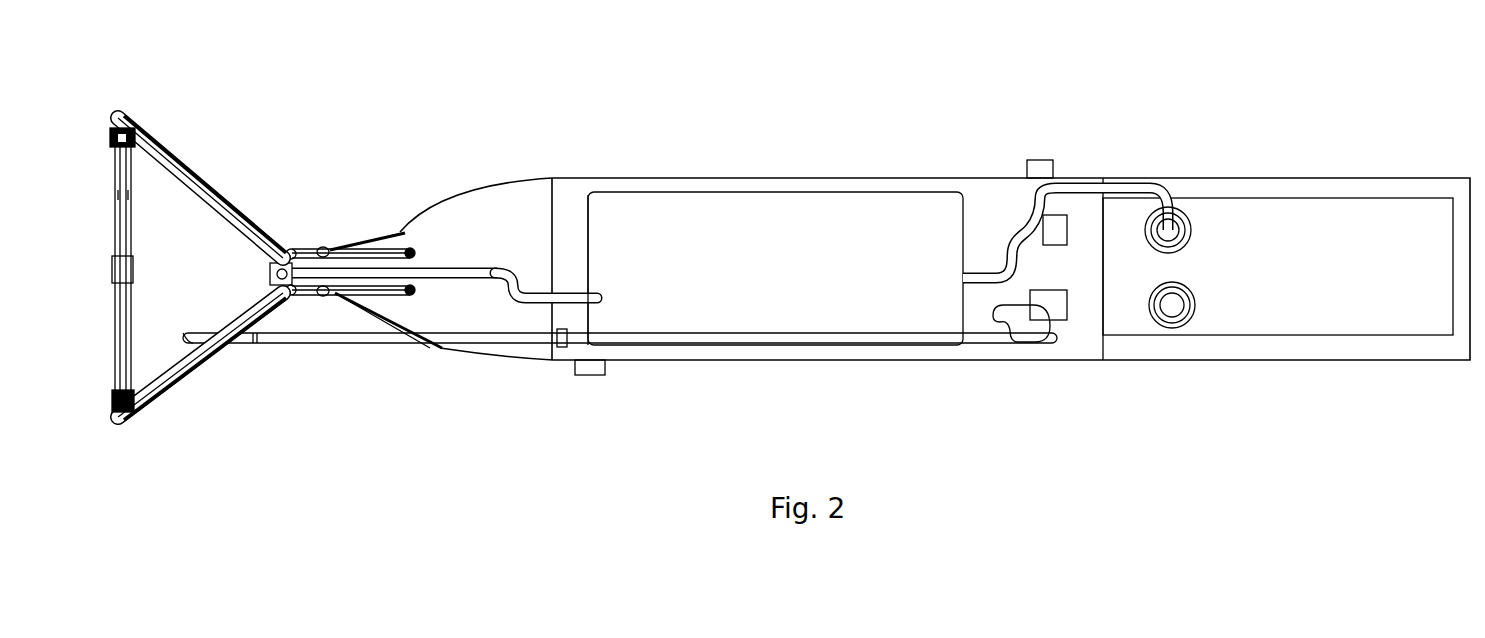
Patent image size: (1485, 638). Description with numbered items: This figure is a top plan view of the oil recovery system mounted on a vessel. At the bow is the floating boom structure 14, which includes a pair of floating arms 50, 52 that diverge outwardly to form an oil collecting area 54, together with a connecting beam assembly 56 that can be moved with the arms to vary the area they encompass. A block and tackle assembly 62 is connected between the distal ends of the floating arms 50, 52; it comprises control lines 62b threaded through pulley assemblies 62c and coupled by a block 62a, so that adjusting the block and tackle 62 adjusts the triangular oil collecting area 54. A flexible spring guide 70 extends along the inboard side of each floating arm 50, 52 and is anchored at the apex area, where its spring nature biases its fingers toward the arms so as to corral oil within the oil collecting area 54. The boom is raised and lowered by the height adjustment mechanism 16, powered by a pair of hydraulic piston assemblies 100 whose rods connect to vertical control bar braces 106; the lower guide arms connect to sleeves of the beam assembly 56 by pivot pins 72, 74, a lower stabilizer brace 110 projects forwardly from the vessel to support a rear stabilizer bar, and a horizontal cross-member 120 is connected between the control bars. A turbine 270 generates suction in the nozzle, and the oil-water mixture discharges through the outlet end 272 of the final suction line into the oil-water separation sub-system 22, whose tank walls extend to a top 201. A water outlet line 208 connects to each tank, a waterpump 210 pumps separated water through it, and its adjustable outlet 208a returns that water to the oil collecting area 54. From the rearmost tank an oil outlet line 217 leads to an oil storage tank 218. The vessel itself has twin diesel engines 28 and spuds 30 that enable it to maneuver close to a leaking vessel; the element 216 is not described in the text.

The floating boom structure 14 is at (211, 115).
The height adjustment mechanism 16 is at (383, 165).
The oil-water separation sub-system 22 is at (810, 150).
The twin diesel engines 28 is at (1058, 227).
The spuds 30 is at (1042, 170).
The floating arm 50 is at (218, 183).
The floating arm 52 is at (168, 392).
The oil collecting area 54 is at (157, 312).
The connecting beam assembly 56 is at (187, 170).
The block and tackle assembly 62 is at (113, 353).
The block 62a is at (128, 257).
The control lines 62b is at (130, 195).
The pulley assemblies 62c is at (114, 128).
The flexible spring guide 70 is at (262, 252).
The pivot pin 72 is at (281, 255).
The pivot pin 74 is at (283, 290).
The hydraulic piston assembly 100 is at (408, 250).
The vertical control bar brace 106 is at (330, 248).
The lower stabilizer brace 110 is at (356, 245).
The horizontal cross-member 120 is at (302, 265).
The top 201 is at (740, 222).
The water outlet line 208 is at (740, 340).
The adjustable outlet 208a is at (180, 332).
The waterpump 210 is at (1028, 332).
The conduit 216 is at (1017, 230).
The oil outlet line 217 is at (1133, 181).
The oil storage tank 218 is at (1292, 240).
The turbine 270 is at (507, 275).
The outlet end 272 is at (597, 290).